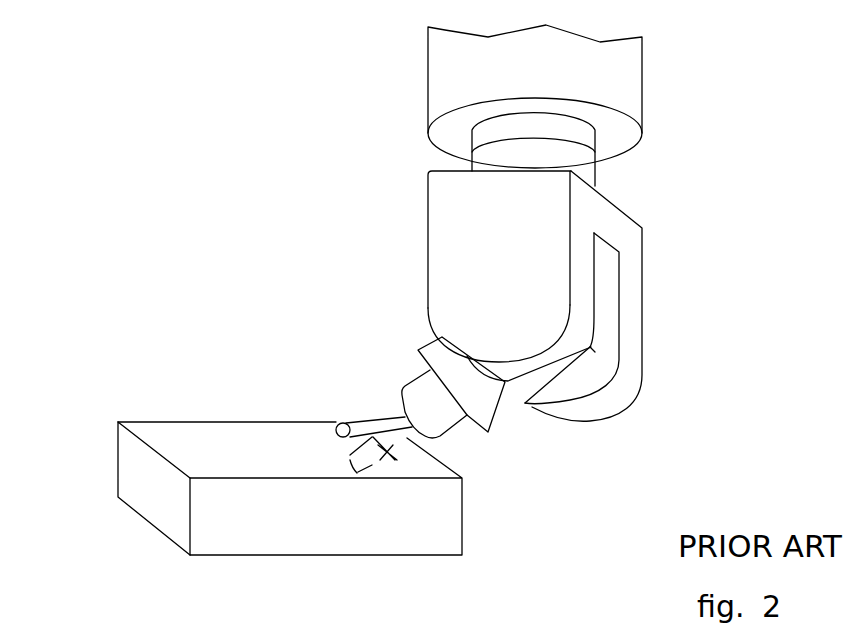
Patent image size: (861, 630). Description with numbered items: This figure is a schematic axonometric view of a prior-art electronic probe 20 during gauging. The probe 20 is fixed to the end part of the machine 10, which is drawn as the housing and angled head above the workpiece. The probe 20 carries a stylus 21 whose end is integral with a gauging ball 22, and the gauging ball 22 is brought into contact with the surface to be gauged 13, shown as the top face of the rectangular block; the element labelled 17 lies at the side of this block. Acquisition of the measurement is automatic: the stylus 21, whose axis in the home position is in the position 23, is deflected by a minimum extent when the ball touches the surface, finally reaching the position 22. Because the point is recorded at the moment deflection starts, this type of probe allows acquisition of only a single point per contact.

The machine 10 is at (489, 413).
The surface to be gauged 13 is at (205, 447).
The workpiece side face 17 is at (142, 477).
The electronic probe 20 is at (391, 356).
The stylus 21 is at (387, 420).
The gauging ball 22 is at (338, 424).
The home position of the stylus axis 23 is at (408, 436).